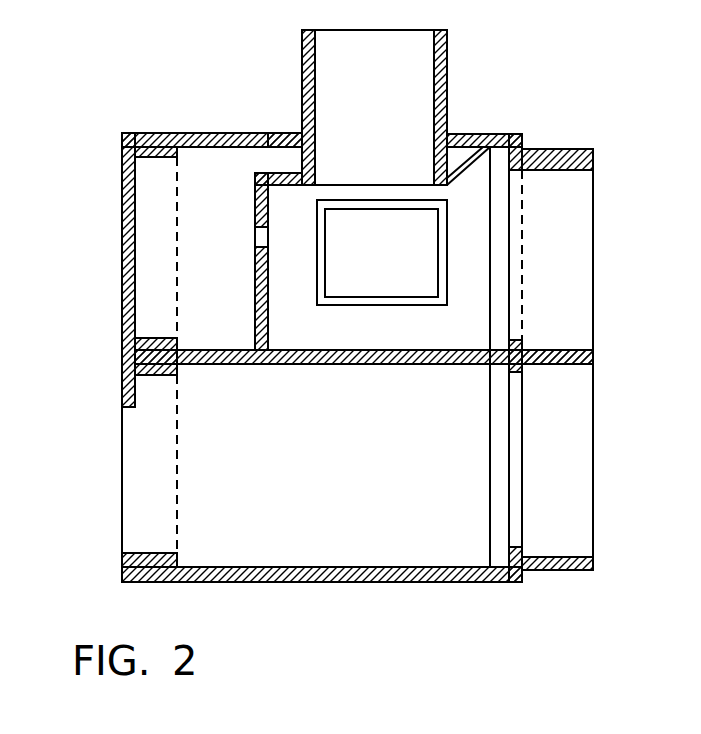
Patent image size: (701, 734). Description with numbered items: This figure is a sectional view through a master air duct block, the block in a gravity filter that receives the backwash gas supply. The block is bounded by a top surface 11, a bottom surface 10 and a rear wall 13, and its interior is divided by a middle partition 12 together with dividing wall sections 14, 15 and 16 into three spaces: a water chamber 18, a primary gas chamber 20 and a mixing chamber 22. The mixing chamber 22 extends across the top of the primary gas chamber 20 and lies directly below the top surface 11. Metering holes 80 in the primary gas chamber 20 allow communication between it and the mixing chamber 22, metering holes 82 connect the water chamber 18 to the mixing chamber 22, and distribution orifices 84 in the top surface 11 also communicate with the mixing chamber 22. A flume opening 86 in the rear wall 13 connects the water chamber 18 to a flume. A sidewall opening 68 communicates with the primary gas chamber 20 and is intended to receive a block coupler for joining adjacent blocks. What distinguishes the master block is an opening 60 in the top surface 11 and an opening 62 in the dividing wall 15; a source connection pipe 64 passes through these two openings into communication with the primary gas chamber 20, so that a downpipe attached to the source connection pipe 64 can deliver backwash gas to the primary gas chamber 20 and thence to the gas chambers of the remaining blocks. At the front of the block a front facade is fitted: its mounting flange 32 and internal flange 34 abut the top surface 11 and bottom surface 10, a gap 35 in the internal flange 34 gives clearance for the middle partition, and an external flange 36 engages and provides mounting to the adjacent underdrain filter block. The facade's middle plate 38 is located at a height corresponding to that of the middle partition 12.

The bottom surface 10 is at (282, 582).
The top surface 11 is at (153, 133).
The middle partition 12 is at (343, 365).
The rear wall 13 is at (122, 262).
The dividing wall section 14 is at (253, 280).
The dividing wall section 15 is at (285, 180).
The dividing wall section 16 is at (472, 168).
The water chamber 18 is at (324, 487).
The primary gas chamber 20 is at (360, 337).
The mixing chamber 22 is at (188, 309).
The mounting flange 32 is at (517, 135).
The internal flange 34 is at (495, 148).
The gap 35 is at (483, 357).
The external flange 36 is at (585, 149).
The middle plate 38 is at (557, 350).
The opening 60 is at (302, 175).
The opening 62 is at (282, 140).
The source connection pipe 64 is at (308, 75).
The opening 68 is at (365, 200).
The metering holes 80 is at (258, 232).
The metering holes 82 is at (218, 363).
The distribution orifices 84 is at (265, 140).
The flume opening 86 is at (122, 477).